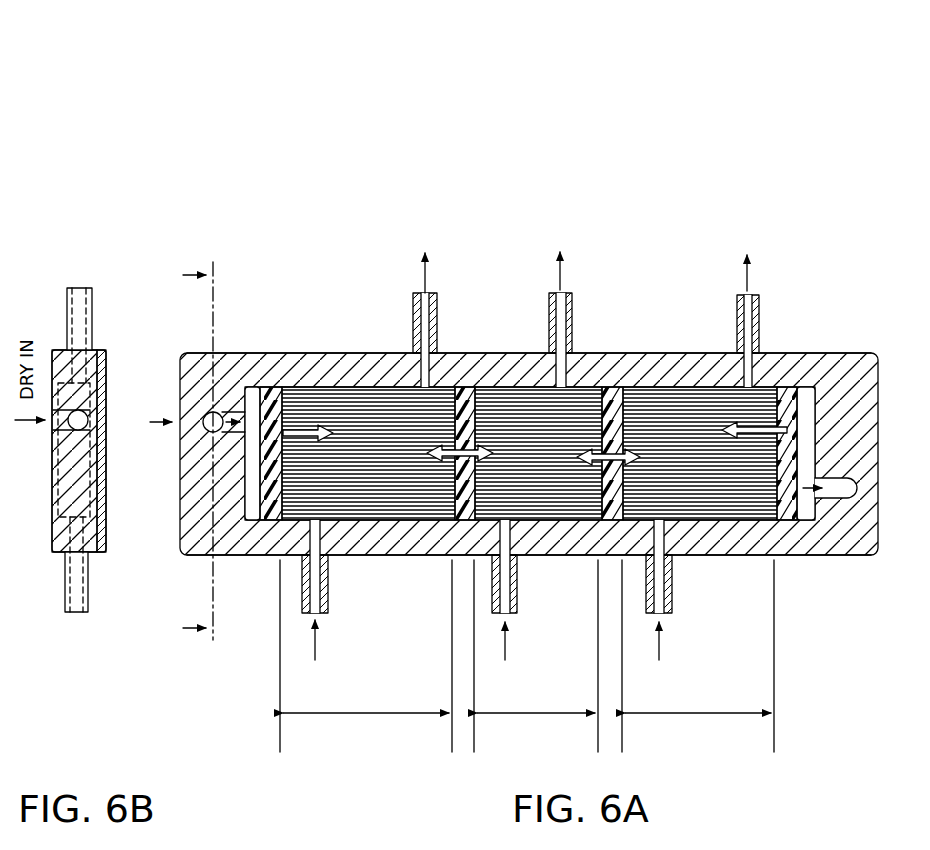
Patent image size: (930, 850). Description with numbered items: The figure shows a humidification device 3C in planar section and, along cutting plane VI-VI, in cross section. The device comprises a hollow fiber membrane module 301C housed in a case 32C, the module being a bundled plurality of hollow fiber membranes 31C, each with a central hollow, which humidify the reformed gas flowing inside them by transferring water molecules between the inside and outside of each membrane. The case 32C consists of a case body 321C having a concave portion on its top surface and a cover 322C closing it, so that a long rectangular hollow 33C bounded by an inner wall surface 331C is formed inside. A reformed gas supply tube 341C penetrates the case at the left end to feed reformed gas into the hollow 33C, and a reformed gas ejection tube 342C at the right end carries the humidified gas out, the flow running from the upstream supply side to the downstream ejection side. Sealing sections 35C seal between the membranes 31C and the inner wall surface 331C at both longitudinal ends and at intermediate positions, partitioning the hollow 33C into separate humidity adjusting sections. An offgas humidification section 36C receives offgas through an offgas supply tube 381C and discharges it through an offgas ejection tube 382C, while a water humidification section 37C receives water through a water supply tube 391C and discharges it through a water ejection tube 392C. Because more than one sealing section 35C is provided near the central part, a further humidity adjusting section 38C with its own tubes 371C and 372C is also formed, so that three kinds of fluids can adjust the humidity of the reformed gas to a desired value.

In FIG. 6A, the humidification device 3C is at (551, 77).
In FIG. 6A, the hollow fiber membrane module 301C is at (375, 143).
In FIG. 6A, the hollow fiber membranes 31C is at (411, 393).
In FIG. 6A, the sealing sections 35C is at (283, 383).
In FIG. 6A, the case 32C is at (359, 342).
In FIG. 6B, the case 32C is at (126, 542).
In FIG. 6A, the case body 321C is at (266, 366).
In FIG. 6B, the case body 321C is at (92, 556).
In FIG. 6B, the cover 322C is at (94, 554).
In FIG. 6A, the hollow 33C is at (252, 386).
In FIG. 6B, the hollow 33C is at (67, 517).
In FIG. 6A, the inner wall surface 331C is at (474, 395).
In FIG. 6A, the reformed gas supply tube 341C is at (212, 412).
In FIG. 6B, the reformed gas supply tube 341C is at (78, 412).
In FIG. 6A, the reformed gas ejection tube 342C is at (843, 500).
In FIG. 6A, the first outlet port 372C is at (418, 293).
In FIG. 6A, the first inlet port 371C is at (327, 604).
In FIG. 6A, the offgas ejection tube 382C is at (587, 285).
In FIG. 6B, the offgas ejection tube 382C is at (80, 288).
In FIG. 6A, the offgas supply tube 381C is at (515, 608).
In FIG. 6B, the offgas supply tube 381C is at (75, 613).
In FIG. 6A, the water ejection tube 392C is at (741, 297).
In FIG. 6A, the water supply tube 391C is at (672, 605).
In FIG. 6A, the first chamber 38C is at (366, 656).
In FIG. 6A, the offgas humidification section 36C is at (536, 656).
In FIG. 6A, the water humidification section 37C is at (698, 656).